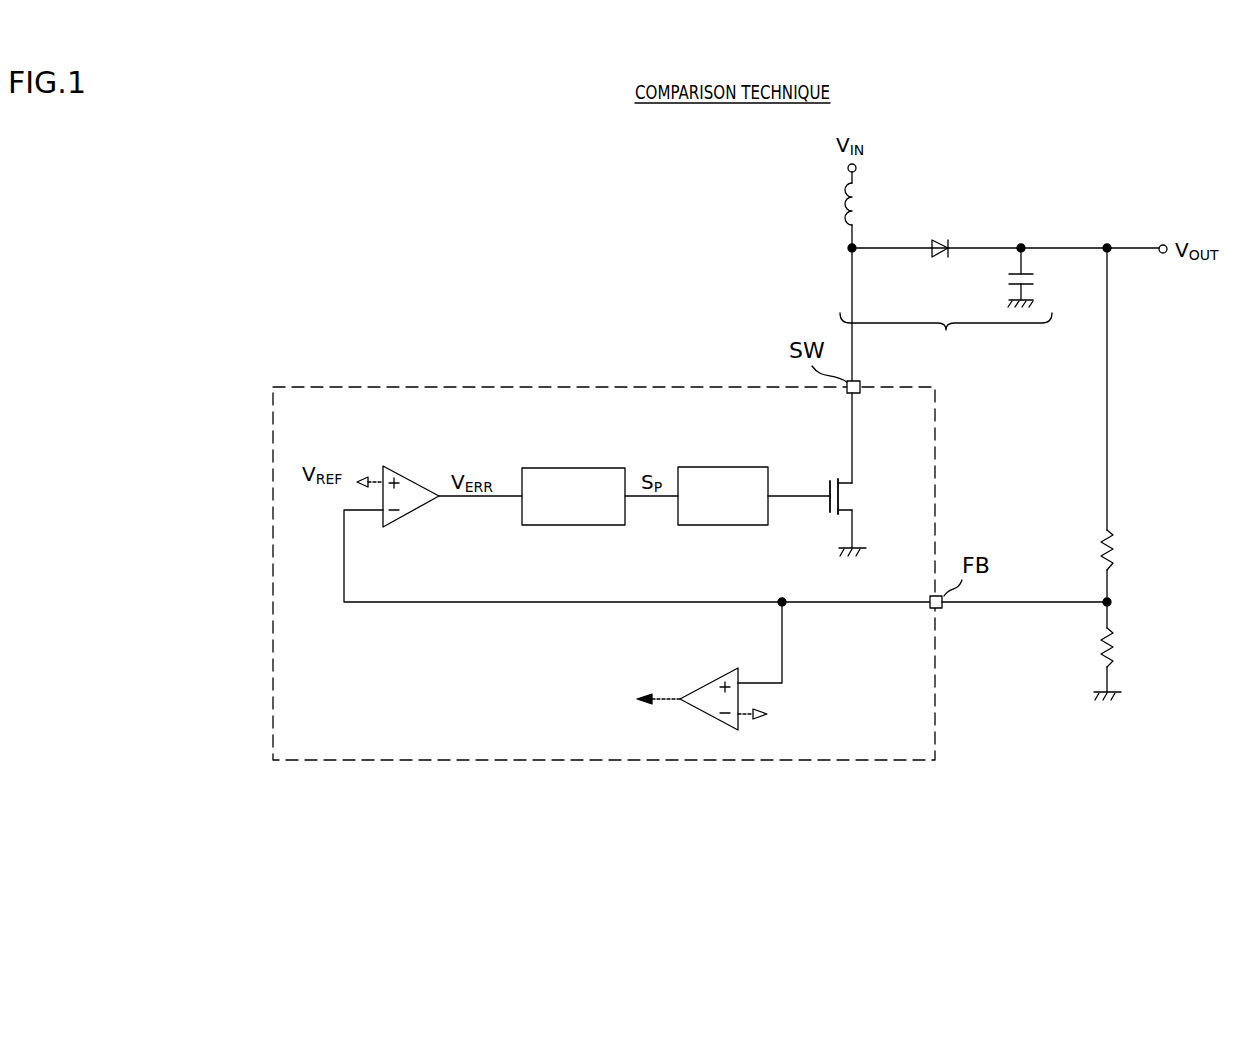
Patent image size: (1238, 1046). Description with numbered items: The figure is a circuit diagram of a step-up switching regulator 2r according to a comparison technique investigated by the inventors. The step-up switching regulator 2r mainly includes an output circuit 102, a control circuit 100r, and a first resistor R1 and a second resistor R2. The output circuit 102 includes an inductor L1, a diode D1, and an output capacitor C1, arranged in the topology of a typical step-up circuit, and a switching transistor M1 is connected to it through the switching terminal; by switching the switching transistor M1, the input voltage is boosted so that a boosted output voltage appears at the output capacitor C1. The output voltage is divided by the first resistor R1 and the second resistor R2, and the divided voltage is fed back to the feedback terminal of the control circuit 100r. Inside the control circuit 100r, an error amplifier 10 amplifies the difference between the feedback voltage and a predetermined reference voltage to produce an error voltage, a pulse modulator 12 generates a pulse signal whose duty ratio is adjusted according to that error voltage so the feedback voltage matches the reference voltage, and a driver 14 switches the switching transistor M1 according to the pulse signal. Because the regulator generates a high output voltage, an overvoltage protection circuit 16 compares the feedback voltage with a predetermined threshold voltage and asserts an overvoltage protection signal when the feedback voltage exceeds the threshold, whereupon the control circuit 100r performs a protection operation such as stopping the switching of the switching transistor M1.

The step-up switching regulator 2r is at (760, 883).
The control circuit 100r is at (556, 761).
The output circuit 102 is at (946, 337).
The error amplifier 10 is at (414, 513).
The pulse modulator 12 is at (586, 527).
The driver 14 is at (729, 527).
The overvoltage protection circuit 16 is at (707, 684).
The inductor L1 is at (864, 198).
The diode D1 is at (943, 238).
The output capacitor C1 is at (1040, 278).
The first resistor R1 is at (1114, 555).
The second resistor R2 is at (1114, 650).
The switching transistor M1 is at (862, 493).